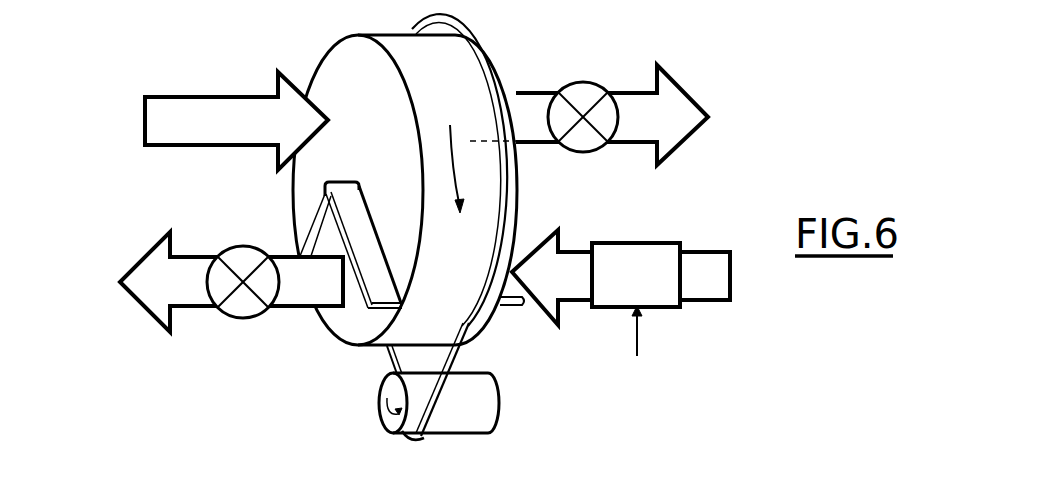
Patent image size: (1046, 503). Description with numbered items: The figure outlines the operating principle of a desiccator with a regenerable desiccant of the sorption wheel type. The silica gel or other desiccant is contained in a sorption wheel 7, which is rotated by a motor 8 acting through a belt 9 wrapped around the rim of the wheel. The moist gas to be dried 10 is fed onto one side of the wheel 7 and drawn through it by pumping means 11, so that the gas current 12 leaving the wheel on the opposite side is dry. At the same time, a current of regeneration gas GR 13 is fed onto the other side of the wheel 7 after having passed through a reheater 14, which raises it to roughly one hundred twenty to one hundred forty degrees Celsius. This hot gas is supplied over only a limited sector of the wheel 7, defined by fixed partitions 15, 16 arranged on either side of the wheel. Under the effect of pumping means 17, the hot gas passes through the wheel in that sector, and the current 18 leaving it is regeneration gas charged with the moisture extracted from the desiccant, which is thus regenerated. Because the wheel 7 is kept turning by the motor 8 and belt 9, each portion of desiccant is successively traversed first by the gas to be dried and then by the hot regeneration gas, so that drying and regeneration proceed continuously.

The sorption wheel 7 is at (323, 65).
The motor 8 is at (457, 420).
The belt 9 is at (460, 352).
The moist gas to be dried 10 is at (190, 124).
The pumping means 11 is at (583, 96).
The gas current leaving the wheel 12 is at (681, 98).
The current of regeneration gas GR 13 is at (700, 292).
The reheater 14 is at (645, 268).
The fixed partition 15 is at (514, 298).
The fixed partition 16 is at (373, 272).
The pumping means 17 is at (247, 303).
The current of regeneration gas leaving the wheel 18 is at (148, 278).